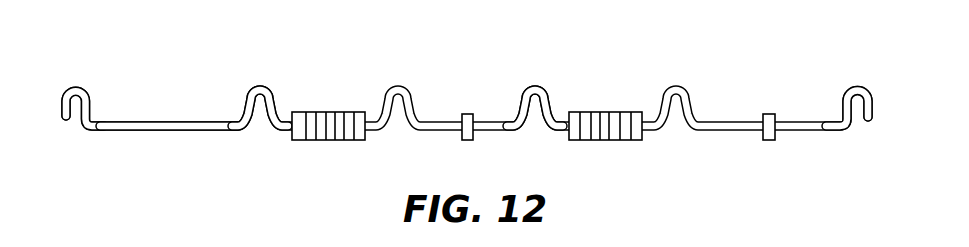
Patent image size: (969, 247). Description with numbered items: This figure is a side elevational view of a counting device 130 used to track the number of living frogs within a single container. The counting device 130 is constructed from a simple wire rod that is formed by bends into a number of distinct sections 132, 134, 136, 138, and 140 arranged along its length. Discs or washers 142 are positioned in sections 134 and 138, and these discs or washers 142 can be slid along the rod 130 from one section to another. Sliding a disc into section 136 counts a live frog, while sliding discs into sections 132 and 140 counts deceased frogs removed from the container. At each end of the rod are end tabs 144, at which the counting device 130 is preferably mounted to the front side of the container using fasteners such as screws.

The counting device 130 is at (692, 97).
The section 132 is at (175, 120).
The section 134 is at (288, 119).
The section 136 is at (488, 120).
The section 138 is at (562, 120).
The section 140 is at (787, 122).
The discs or washers 142 is at (328, 141).
The end tabs 144 is at (76, 86).